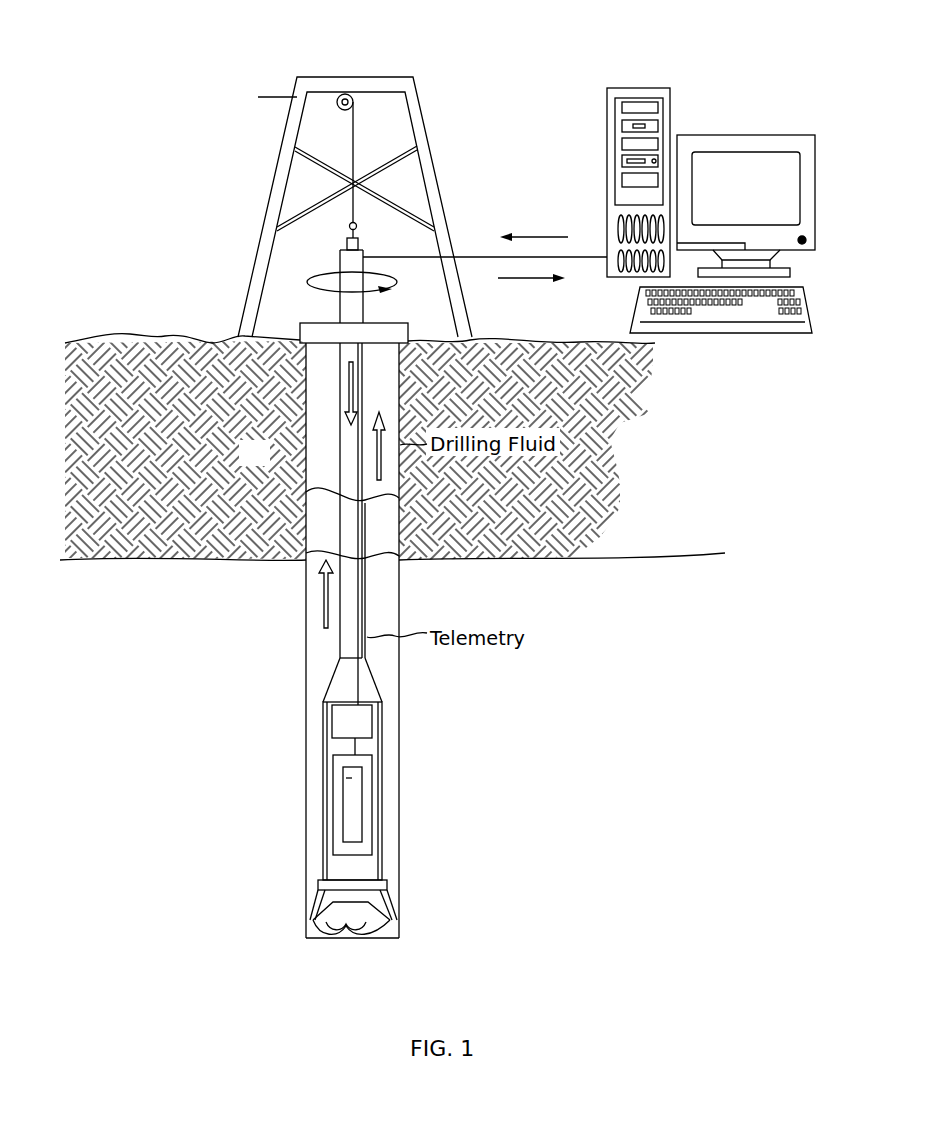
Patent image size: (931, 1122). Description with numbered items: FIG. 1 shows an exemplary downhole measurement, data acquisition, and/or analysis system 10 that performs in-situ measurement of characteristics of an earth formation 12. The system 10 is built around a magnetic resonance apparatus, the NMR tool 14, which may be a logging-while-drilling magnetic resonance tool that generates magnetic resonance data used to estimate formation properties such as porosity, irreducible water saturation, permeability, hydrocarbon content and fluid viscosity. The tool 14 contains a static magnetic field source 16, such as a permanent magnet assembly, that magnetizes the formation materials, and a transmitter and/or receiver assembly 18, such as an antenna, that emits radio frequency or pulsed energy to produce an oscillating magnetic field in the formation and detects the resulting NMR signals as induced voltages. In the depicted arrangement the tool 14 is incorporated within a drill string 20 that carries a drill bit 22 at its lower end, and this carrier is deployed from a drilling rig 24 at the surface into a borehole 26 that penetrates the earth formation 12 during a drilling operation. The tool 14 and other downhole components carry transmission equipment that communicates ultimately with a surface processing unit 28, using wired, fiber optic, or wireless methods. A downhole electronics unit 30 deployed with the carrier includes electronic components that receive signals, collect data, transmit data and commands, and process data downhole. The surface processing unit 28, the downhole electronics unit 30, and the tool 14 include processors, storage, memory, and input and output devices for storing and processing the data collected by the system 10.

The downhole measurement, data acquisition, and/or analysis system 10 is at (150, 257).
The earth formation 12 is at (563, 663).
The NMR tool 14 is at (333, 762).
The static magnetic field source 16 is at (358, 778).
The transmitter and/or receiver assembly 18 is at (356, 804).
The drill string 20 is at (340, 646).
The drill bit 22 is at (316, 899).
The drilling rig 24 is at (268, 197).
The borehole 26 is at (306, 466).
The surface processing unit 28 is at (640, 88).
The downhole electronics unit 30 is at (333, 722).